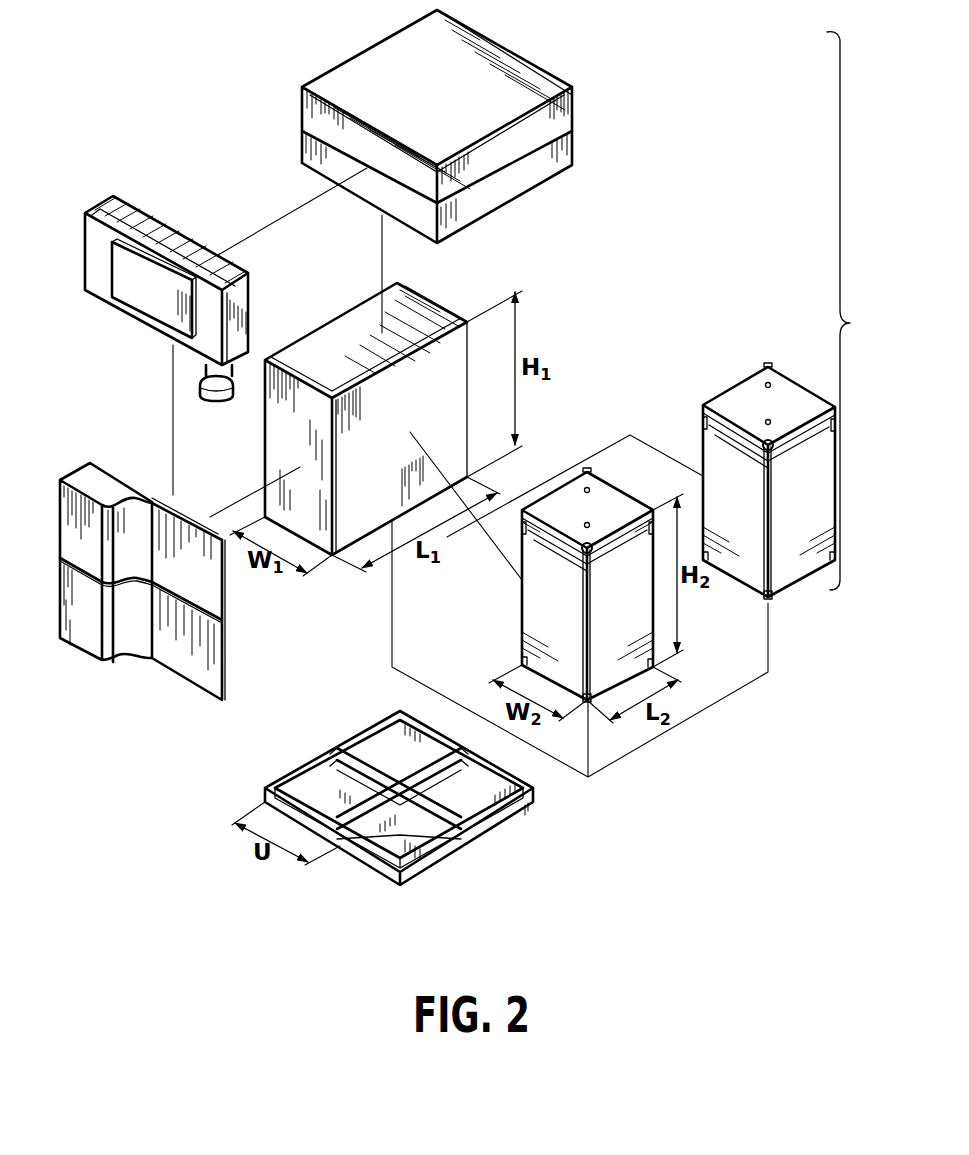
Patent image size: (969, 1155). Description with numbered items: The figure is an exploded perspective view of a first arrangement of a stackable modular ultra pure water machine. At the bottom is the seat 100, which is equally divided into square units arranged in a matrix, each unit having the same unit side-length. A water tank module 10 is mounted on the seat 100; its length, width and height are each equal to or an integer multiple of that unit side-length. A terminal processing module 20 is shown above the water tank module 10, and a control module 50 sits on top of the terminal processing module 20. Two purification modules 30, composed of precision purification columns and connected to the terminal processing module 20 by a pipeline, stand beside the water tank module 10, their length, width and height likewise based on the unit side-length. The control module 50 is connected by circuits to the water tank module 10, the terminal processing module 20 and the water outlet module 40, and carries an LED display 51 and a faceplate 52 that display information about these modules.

The water tank module 10 is at (447, 370).
The terminal processing module 20 is at (308, 159).
The purification module 30 is at (640, 632).
The water outlet module 40 is at (218, 394).
The control module 50 is at (310, 110).
The LED display 51 is at (130, 294).
The faceplate 52 is at (92, 513).
The seat 100 is at (465, 853).